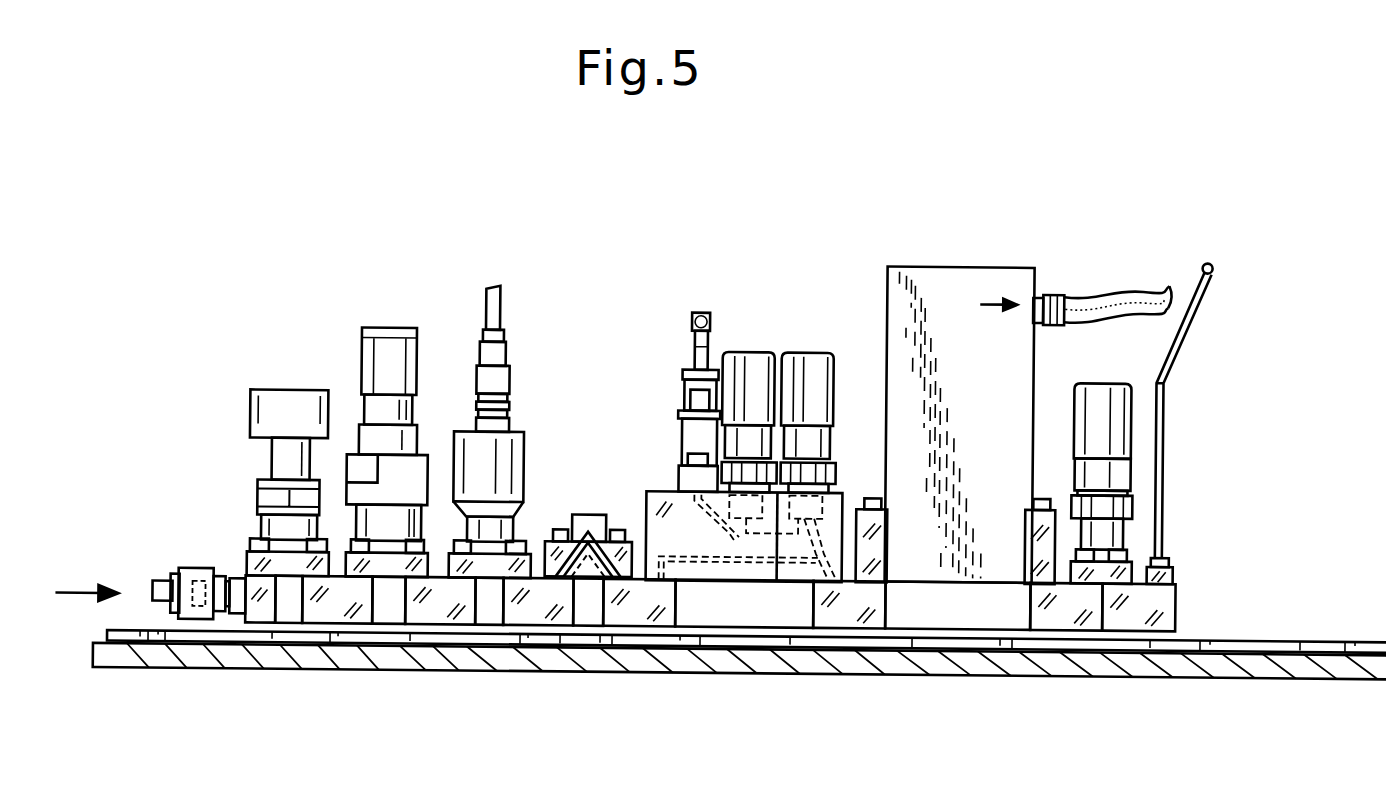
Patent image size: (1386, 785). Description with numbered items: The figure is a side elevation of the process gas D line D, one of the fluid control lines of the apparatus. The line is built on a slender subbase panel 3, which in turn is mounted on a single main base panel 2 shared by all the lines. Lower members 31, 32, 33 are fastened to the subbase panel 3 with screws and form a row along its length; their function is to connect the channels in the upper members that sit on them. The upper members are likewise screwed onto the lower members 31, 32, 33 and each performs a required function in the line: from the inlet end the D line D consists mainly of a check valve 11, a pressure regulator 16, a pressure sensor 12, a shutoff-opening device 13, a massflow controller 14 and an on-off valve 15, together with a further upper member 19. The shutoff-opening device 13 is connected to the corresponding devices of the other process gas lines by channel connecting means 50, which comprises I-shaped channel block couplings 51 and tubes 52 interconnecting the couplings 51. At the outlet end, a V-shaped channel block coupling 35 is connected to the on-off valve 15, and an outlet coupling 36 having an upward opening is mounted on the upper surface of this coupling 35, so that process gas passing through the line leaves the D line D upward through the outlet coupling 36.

The main base panel 2 is at (1320, 647).
The subbase panel 3 is at (1358, 673).
The check valve 11 is at (250, 400).
The pressure sensor 12 is at (517, 450).
The shutoff-opening device 13 is at (662, 490).
The massflow controller 14 is at (962, 290).
The on-off valve 15 is at (1102, 393).
The pressure regulator 16 is at (385, 330).
The upper member 19 is at (596, 518).
The lower member 31 is at (190, 612).
The lower member 32 is at (262, 608).
The lower member 33 is at (350, 612).
The V-shaped channel block coupling 35 is at (1160, 598).
The outlet coupling 36 is at (1168, 568).
The channel connecting means 50 is at (657, 355).
The I-shaped channel block coupling 51 is at (681, 432).
The tube 52 is at (694, 352).
The process gas D line D is at (1235, 262).